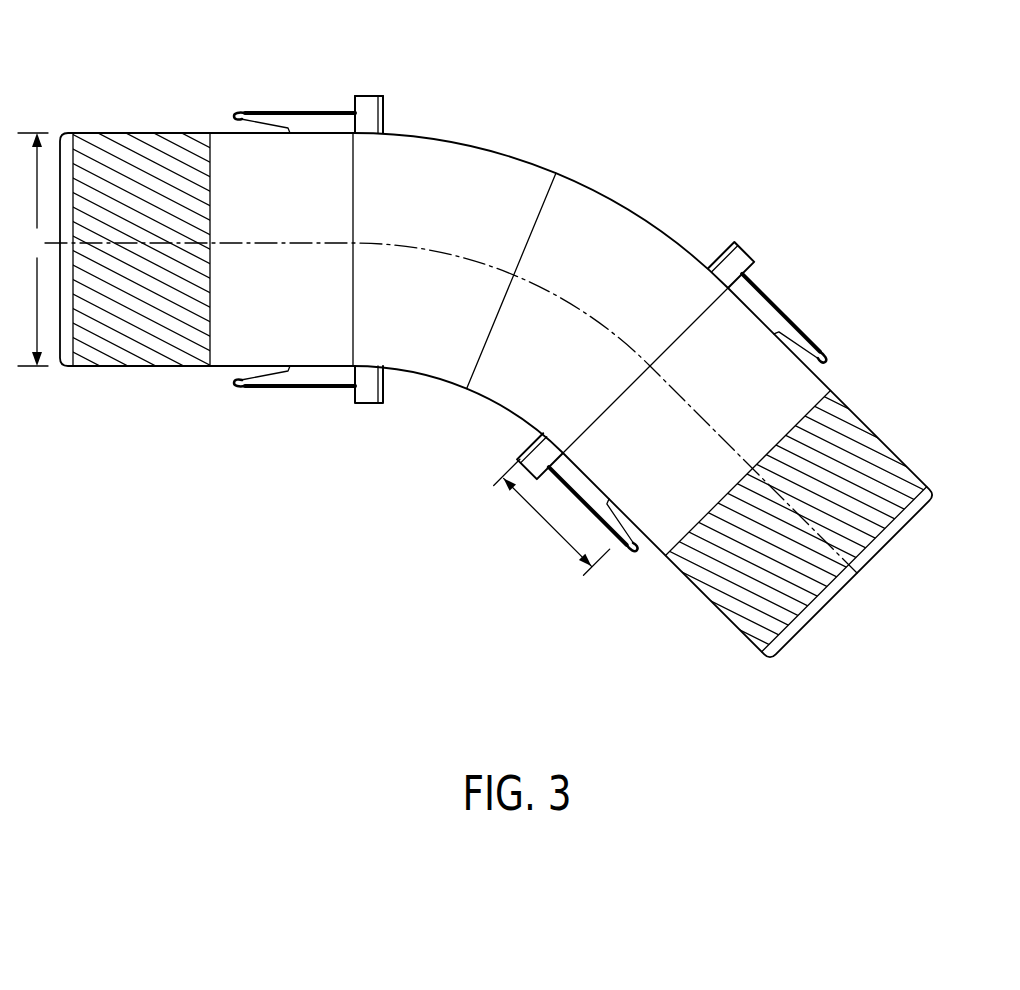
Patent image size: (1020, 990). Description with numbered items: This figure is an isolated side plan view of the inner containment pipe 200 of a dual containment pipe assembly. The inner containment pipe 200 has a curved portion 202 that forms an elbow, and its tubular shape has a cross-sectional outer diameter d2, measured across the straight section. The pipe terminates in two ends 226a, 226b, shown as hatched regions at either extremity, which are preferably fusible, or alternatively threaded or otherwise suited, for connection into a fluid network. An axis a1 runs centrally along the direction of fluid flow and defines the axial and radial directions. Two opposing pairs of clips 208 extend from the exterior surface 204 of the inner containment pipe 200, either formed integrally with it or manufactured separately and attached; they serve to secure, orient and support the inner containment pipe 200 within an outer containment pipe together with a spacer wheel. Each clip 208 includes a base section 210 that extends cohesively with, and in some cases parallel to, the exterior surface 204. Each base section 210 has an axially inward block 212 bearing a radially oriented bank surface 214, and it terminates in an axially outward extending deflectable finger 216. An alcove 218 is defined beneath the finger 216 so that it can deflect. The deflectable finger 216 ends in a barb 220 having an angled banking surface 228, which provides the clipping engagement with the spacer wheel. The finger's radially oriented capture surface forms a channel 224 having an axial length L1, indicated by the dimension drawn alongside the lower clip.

The inner containment pipe 200 is at (340, 594).
The curved portion 202 is at (495, 170).
The exterior surface 204 is at (482, 388).
The clips 208 is at (305, 373).
The base section 210 is at (330, 375).
The axially inward block 212 is at (372, 115).
The bank surface 214 is at (353, 103).
The deflectable finger 216 is at (283, 124).
The alcove 218 is at (228, 378).
The barb 220 is at (241, 111).
The channel 224 is at (800, 288).
The end 226a is at (125, 150).
The end 226b is at (712, 594).
The angled banking surface 228 is at (243, 389).
The axis a1 is at (881, 607).
The cross-sectional outer diameter d2 is at (33, 249).
The axial length L1 is at (546, 528).